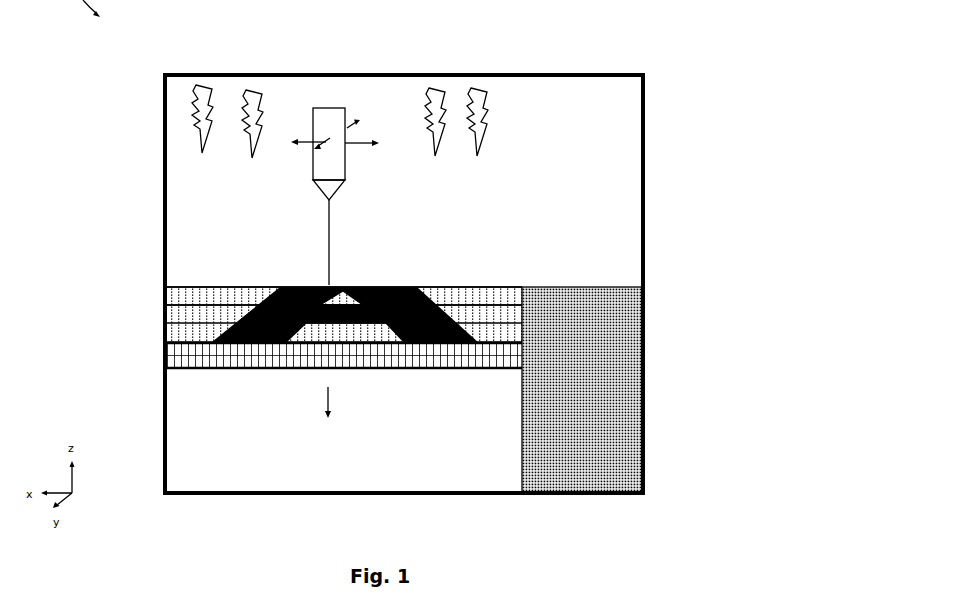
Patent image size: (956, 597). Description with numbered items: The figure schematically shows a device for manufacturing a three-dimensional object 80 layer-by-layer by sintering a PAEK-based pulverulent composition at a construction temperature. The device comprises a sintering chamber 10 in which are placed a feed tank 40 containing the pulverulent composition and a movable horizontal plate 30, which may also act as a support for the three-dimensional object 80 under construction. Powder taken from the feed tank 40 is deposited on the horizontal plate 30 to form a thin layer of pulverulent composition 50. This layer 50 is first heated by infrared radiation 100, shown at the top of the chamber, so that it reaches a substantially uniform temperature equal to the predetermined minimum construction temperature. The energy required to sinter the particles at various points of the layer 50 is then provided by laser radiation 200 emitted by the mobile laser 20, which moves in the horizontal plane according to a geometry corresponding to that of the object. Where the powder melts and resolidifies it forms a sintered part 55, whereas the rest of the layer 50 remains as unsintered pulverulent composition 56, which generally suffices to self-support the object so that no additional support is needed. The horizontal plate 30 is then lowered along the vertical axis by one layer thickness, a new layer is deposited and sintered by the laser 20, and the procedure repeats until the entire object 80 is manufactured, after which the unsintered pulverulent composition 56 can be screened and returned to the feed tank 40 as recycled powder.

The sintering chamber 10 is at (147, 193).
The mobile laser 20 is at (345, 160).
The laser radiation 200 is at (330, 241).
The movable horizontal plate 30 is at (522, 358).
The feed tank 40 is at (625, 442).
The layer of pulverulent composition 50 is at (497, 297).
The sintered part 55 is at (413, 287).
The unsintered pulverulent composition 56 is at (457, 298).
The three-dimensional object 80 is at (300, 276).
The infrared radiation 100 is at (487, 103).